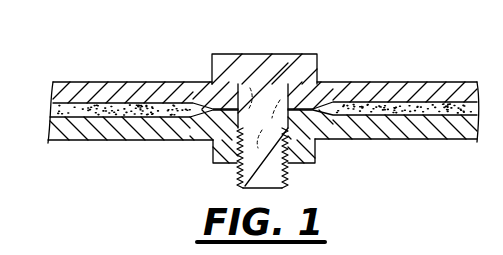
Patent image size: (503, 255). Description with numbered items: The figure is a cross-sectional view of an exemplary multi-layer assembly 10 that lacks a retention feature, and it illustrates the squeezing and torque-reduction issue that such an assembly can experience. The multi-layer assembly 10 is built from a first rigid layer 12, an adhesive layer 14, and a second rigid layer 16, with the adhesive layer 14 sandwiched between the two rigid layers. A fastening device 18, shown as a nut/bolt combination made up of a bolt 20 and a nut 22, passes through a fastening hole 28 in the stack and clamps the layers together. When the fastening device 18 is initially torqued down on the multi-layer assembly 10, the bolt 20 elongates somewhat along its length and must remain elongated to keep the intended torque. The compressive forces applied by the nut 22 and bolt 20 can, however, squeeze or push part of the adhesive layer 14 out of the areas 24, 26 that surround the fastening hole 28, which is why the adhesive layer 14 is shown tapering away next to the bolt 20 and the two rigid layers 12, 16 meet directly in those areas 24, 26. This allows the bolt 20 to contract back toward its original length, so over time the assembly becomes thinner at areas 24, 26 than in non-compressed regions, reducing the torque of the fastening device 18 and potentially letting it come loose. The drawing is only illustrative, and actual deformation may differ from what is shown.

The multi-layer assembly 10 is at (401, 54).
The first rigid layer 12 is at (147, 130).
The adhesive layer 14 is at (62, 110).
The second rigid layer 16 is at (133, 90).
The fastening device 18 is at (229, 47).
The bolt 20 is at (249, 97).
The nut 22 is at (303, 150).
The area 24 is at (222, 102).
The area 26 is at (307, 98).
The fastening hole 28 is at (274, 92).